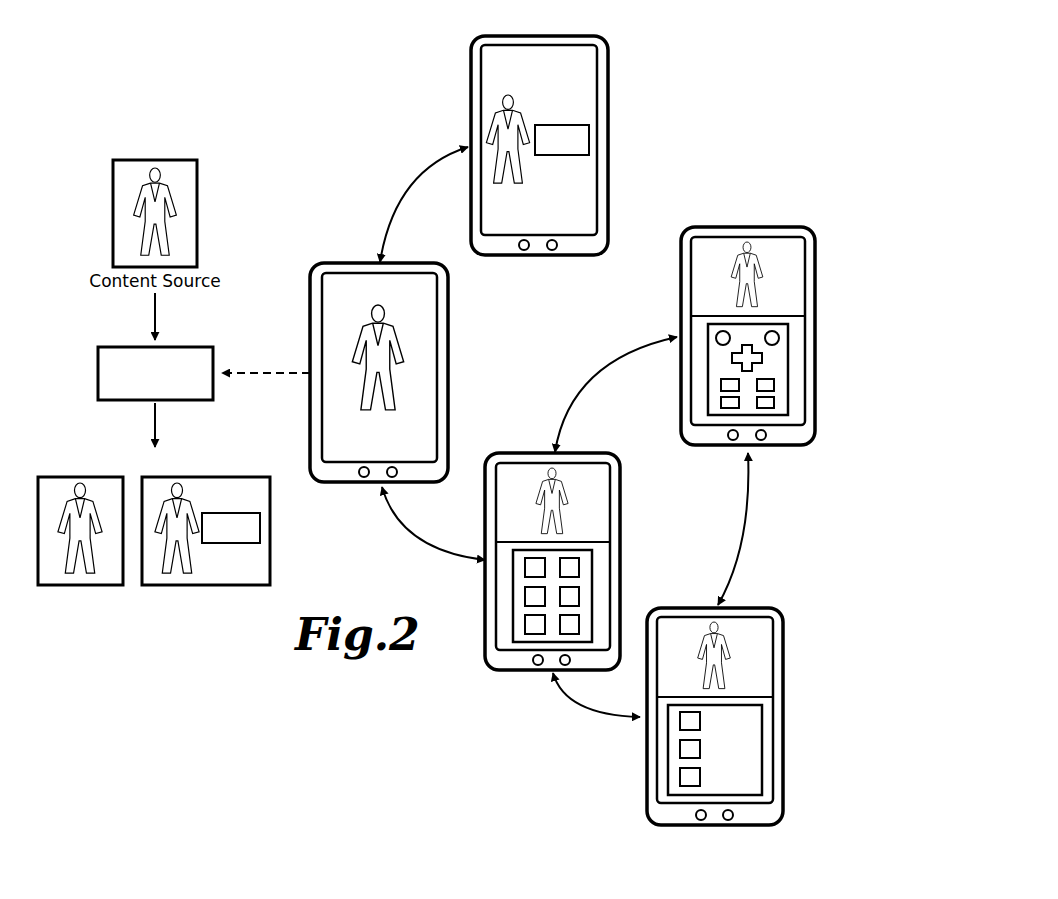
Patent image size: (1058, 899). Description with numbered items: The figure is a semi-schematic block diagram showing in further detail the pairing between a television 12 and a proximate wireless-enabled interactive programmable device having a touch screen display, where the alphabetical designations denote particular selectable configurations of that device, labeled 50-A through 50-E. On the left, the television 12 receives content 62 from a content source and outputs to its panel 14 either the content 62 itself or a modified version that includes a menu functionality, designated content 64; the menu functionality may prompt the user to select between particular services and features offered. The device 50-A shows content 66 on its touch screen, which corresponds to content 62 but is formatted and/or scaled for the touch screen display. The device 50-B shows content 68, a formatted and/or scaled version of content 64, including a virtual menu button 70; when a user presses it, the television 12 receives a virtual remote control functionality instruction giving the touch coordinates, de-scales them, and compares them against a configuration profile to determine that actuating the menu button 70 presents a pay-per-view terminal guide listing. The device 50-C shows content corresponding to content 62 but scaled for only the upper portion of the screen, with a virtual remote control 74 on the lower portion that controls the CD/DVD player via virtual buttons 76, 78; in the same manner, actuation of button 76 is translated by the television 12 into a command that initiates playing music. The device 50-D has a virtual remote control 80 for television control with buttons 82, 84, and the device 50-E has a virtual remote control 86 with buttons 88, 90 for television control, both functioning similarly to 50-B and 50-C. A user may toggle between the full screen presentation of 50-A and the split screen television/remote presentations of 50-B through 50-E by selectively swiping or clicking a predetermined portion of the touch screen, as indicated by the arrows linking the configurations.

The television 12 is at (98, 372).
The panel 14 is at (257, 472).
The proximate wireless-enabled interactive programmable device 50-A is at (400, 372).
The proximate wireless-enabled interactive programmable device 50-B is at (580, 128).
The proximate wireless-enabled interactive programmable device 50-C is at (564, 561).
The proximate wireless-enabled interactive programmable device 50-D is at (790, 317).
The proximate wireless-enabled interactive programmable device 50-E is at (731, 695).
The content 62 is at (113, 217).
The content 64 is at (205, 586).
The content 66 is at (330, 323).
The content 68 is at (575, 53).
The virtual button 70 is at (589, 140).
The virtual remote control 74 is at (513, 595).
The virtual button 76 is at (525, 566).
The virtual button 78 is at (525, 623).
The virtual remote control 80 is at (780, 378).
The button 82 is at (760, 360).
The button 84 is at (770, 400).
The virtual remote control 86 is at (758, 758).
The button 88 is at (688, 722).
The button 90 is at (688, 778).